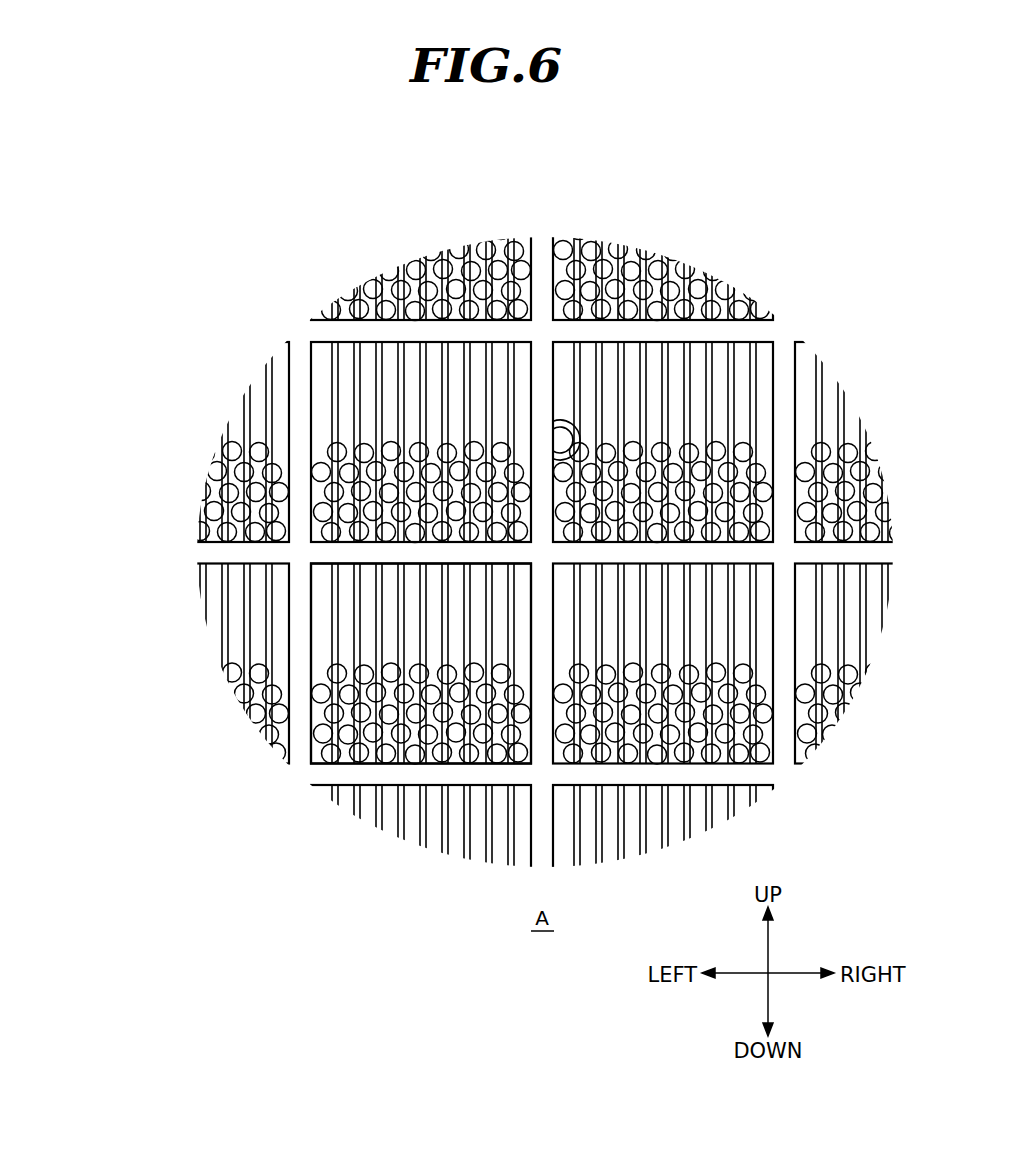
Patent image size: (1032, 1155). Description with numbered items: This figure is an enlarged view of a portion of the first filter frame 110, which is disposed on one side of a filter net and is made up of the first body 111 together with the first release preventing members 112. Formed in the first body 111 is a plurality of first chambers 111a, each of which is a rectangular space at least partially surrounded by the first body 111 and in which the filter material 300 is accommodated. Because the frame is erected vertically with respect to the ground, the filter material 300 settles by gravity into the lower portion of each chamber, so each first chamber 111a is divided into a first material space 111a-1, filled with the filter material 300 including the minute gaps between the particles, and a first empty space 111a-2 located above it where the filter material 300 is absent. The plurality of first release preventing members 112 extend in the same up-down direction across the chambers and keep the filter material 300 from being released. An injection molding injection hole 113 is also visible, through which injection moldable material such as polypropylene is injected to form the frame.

The first filter frame 110 is at (158, 303).
The first body 111 is at (340, 334).
The first release preventing member 112 is at (333, 363).
The injection molding injection hole 113 is at (580, 433).
The filter material 300 is at (242, 533).
The first chamber 111a is at (112, 683).
The first material space 111a-1 is at (323, 749).
The first empty space 111a-2 is at (320, 662).